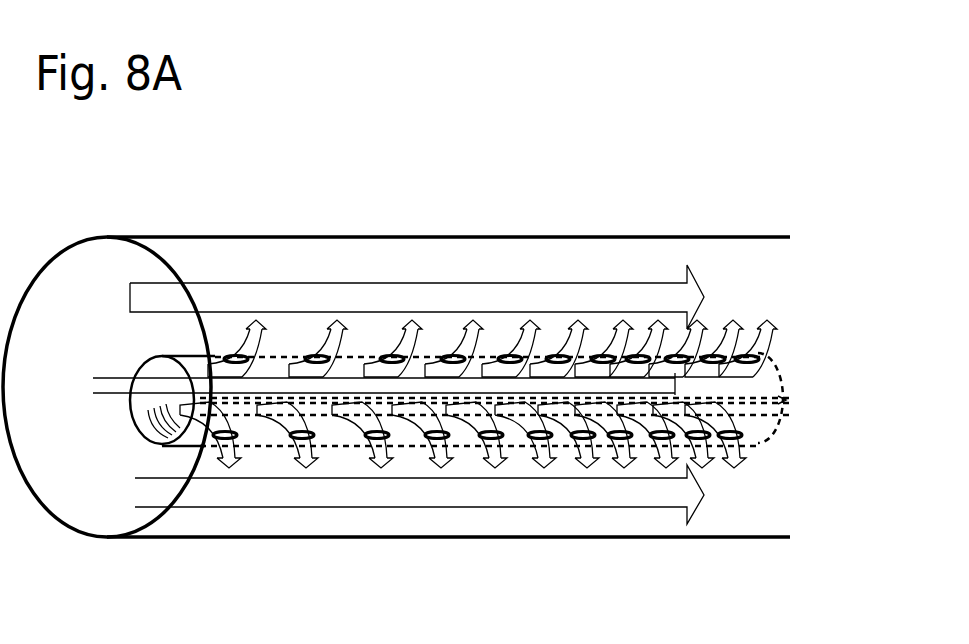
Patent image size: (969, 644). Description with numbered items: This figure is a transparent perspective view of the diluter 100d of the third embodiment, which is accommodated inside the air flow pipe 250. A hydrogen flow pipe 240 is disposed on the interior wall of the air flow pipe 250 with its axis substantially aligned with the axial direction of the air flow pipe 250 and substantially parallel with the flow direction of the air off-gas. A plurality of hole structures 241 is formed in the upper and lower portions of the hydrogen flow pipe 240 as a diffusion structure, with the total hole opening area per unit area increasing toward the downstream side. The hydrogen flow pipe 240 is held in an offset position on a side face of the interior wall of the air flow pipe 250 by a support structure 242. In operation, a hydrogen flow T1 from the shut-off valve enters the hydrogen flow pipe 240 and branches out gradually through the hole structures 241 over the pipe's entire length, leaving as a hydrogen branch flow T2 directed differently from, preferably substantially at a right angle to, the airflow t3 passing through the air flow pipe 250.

The air flow pipe 250 is at (423, 236).
The hydrogen flow pipe 240 is at (173, 355).
The hole structures 241 is at (557, 355).
The support structure 242 is at (482, 400).
The hydrogen branch flow T2 is at (712, 318).
The hydrogen flow T1 is at (736, 377).
The airflow t3 is at (642, 297).
The diluter 100d is at (772, 606).